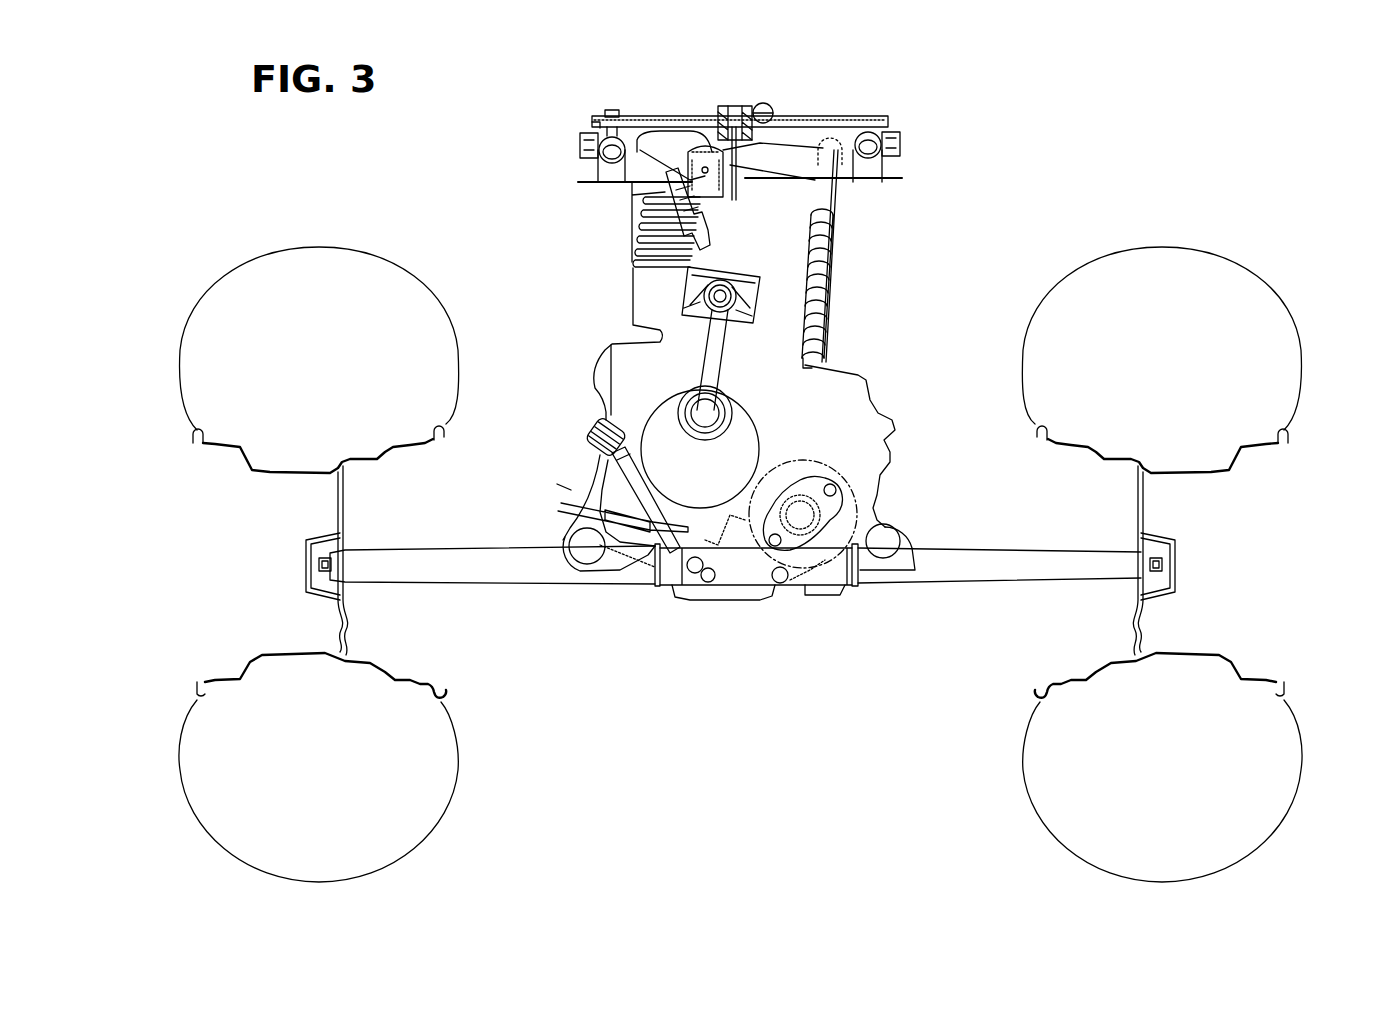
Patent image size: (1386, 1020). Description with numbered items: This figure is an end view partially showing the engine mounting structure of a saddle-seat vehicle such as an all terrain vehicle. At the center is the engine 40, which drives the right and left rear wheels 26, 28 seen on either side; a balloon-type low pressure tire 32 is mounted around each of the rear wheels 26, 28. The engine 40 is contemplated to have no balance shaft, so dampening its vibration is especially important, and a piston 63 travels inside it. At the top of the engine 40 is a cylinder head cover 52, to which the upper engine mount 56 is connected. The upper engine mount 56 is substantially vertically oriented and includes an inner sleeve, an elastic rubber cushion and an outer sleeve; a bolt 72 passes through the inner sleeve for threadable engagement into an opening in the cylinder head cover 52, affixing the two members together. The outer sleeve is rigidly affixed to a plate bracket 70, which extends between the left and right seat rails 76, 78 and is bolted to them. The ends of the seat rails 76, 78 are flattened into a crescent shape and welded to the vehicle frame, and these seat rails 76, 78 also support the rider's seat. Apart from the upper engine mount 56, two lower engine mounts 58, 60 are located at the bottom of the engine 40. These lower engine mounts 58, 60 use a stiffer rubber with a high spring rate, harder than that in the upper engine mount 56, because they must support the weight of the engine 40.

The right rear wheel 26 is at (1142, 500).
The left rear wheel 28 is at (338, 497).
The balloon-type low pressure tire 32 is at (213, 340).
The engine 40 is at (845, 410).
The cylinder head cover 52 is at (803, 185).
The upper engine mount 56 is at (756, 95).
The lower engine mount 58 is at (583, 538).
The lower engine mount 60 is at (887, 540).
The piston 63 is at (700, 298).
The plate bracket 70 is at (830, 116).
The bolt 72 is at (725, 106).
The left seat rail 76 is at (578, 147).
The right seat rail 78 is at (890, 148).